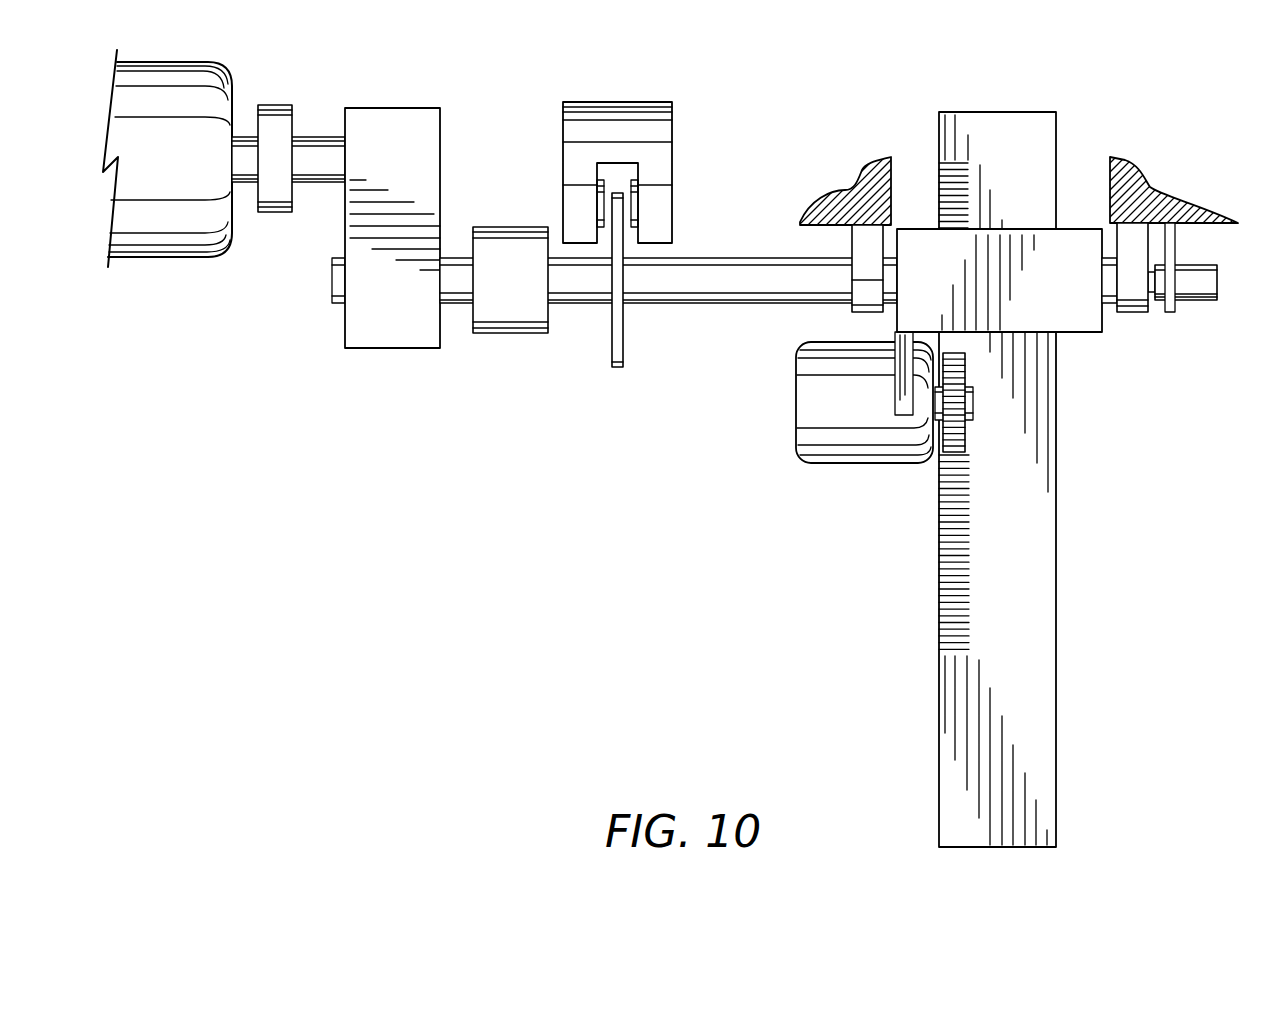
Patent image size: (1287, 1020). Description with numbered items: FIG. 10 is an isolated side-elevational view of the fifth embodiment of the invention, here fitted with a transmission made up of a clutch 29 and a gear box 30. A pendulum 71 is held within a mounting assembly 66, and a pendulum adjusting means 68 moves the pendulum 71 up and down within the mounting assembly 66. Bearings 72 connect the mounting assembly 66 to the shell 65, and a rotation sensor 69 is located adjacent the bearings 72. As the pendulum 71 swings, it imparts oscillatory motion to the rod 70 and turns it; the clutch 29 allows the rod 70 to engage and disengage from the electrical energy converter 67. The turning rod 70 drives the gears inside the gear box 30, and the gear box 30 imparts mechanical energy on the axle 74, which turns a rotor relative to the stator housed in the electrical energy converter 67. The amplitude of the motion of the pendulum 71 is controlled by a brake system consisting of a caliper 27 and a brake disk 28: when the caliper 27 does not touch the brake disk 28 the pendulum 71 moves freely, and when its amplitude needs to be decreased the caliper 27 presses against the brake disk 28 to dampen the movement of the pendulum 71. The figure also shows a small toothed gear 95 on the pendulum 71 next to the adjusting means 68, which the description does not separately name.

The caliper 27 is at (657, 102).
The brake disk 28 is at (612, 355).
The clutch 29 is at (520, 335).
The gear box 30 is at (362, 348).
The shell 65 is at (882, 160).
The mounting assembly 66 is at (1082, 335).
The electrical energy converter 67 is at (197, 62).
The pendulum adjusting means 68 is at (823, 458).
The rotation sensor 69 is at (1205, 277).
The rod 70 is at (790, 258).
The pendulum 71 is at (1057, 540).
The bearing 72 is at (862, 305).
The axle 74 is at (313, 136).
The pinion gear 95 is at (965, 440).